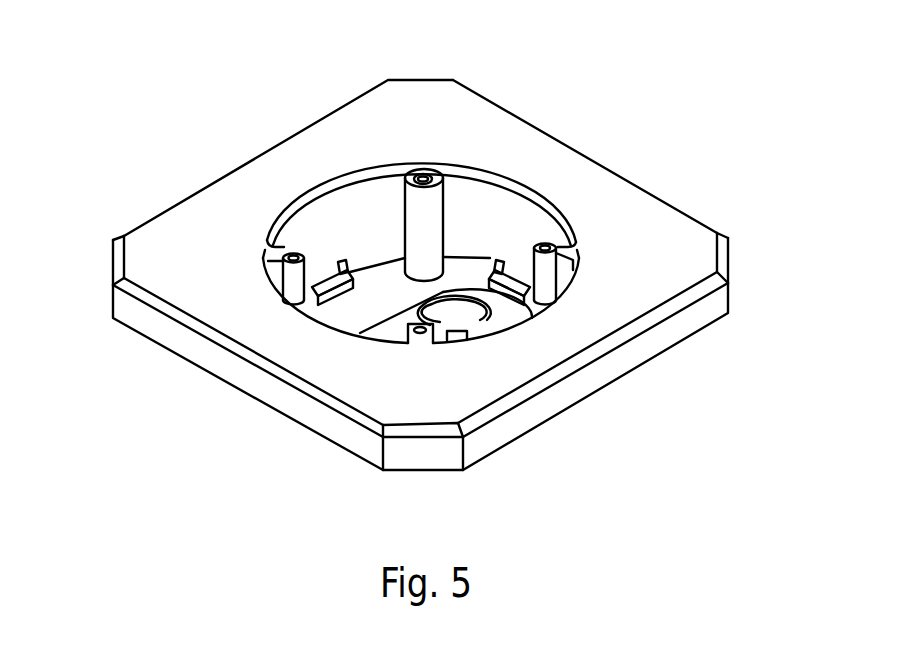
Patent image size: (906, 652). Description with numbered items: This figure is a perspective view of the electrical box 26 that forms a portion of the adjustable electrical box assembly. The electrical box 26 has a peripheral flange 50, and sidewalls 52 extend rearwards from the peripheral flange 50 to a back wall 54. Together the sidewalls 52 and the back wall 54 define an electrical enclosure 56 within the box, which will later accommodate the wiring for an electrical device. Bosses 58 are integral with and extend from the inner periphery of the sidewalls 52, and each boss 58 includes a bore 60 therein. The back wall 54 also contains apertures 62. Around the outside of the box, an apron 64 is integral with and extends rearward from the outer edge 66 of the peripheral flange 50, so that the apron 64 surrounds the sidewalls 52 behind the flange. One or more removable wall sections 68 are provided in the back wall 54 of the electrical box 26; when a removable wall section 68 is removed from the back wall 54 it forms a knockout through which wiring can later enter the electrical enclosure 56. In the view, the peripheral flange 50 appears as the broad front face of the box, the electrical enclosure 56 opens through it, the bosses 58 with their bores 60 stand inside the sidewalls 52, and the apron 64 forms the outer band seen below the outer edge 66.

The electrical box 26 is at (150, 152).
The peripheral flange 50 is at (657, 260).
The sidewalls 52 is at (350, 236).
The back wall 54 is at (387, 311).
The electrical enclosure 56 is at (472, 225).
The bosses 58 is at (421, 215).
The bore 60 is at (423, 173).
The apertures 62 is at (323, 277).
The apron 64 is at (650, 347).
The outer edge 66 is at (672, 200).
The removable wall sections 68 is at (455, 318).